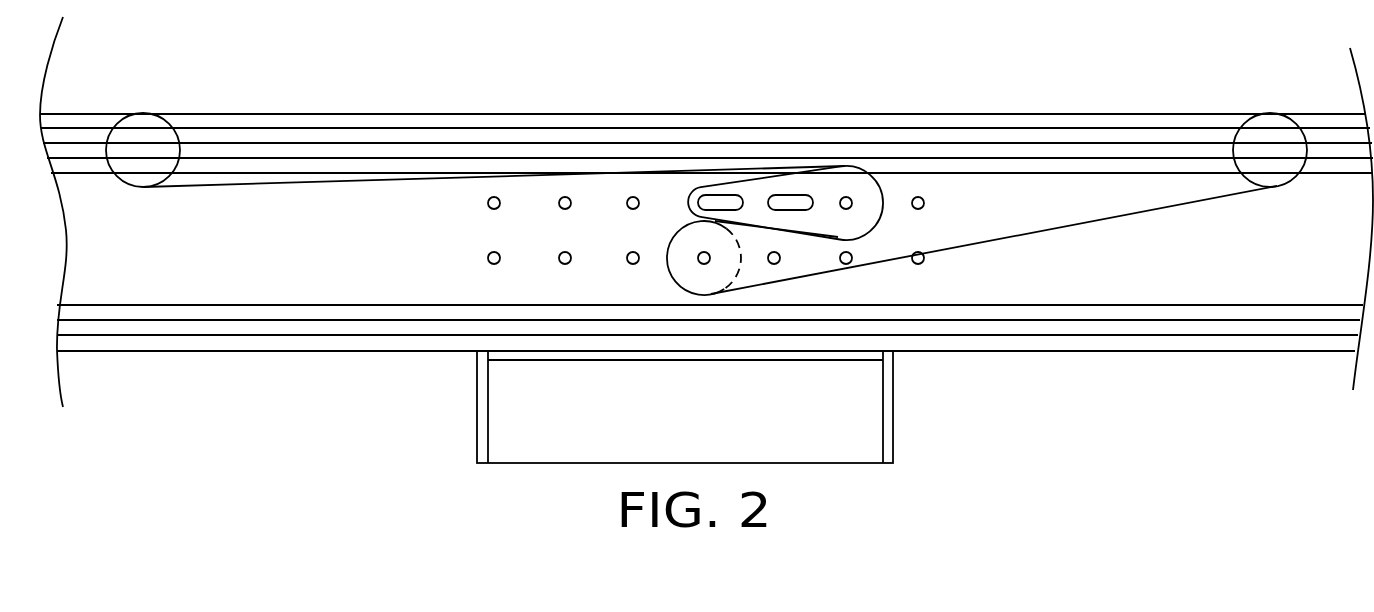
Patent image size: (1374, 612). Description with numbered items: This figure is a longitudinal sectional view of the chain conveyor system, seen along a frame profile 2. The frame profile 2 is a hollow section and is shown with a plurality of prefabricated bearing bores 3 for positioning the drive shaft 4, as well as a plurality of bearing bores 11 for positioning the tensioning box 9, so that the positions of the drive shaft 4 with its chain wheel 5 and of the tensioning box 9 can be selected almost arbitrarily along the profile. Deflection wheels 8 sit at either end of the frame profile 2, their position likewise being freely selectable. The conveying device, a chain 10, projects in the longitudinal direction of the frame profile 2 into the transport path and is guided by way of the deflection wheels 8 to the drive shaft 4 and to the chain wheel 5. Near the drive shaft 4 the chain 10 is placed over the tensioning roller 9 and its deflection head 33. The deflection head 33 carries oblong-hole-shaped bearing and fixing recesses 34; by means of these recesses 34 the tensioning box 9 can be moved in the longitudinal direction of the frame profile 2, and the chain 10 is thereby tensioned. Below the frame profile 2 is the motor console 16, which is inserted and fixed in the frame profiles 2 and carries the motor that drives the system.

The frame profile 2 is at (333, 262).
The bearing bores 3 is at (490, 263).
The drive shaft 4 is at (700, 262).
The chain wheel 5 is at (669, 241).
The deflection wheels 8 is at (125, 183).
The tensioning box 9 is at (827, 222).
The chain 10 is at (1045, 231).
The bearing bores 11 is at (489, 206).
The motor console 16 is at (860, 427).
The deflection head 33 is at (883, 187).
The bearing and fixing recesses 34 is at (726, 194).